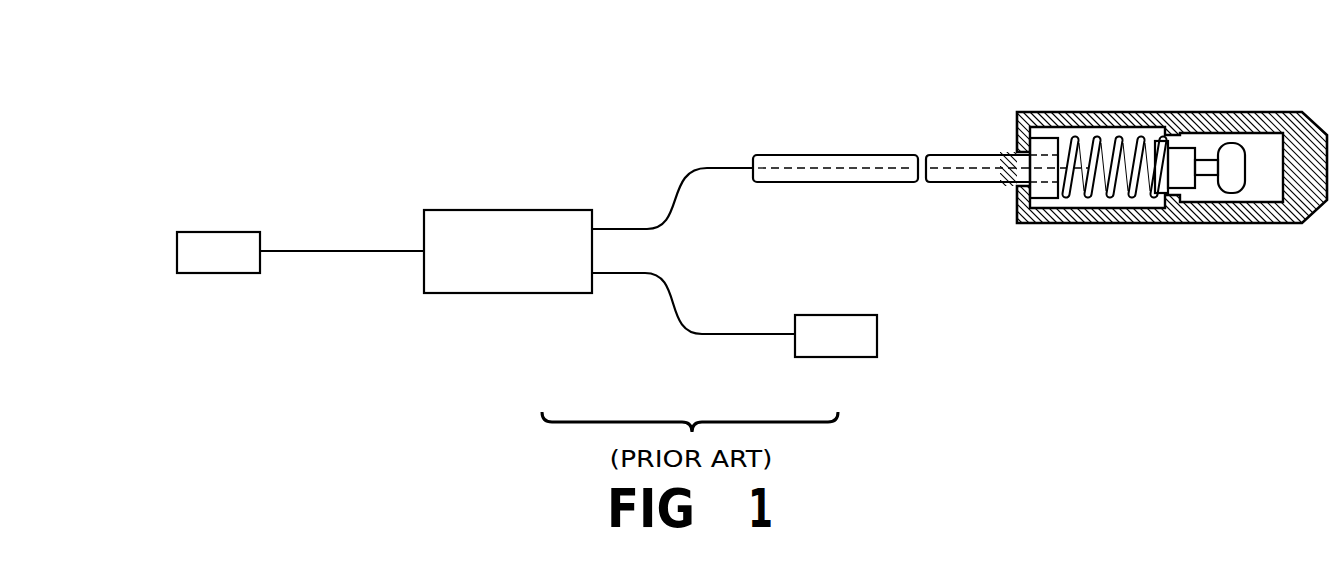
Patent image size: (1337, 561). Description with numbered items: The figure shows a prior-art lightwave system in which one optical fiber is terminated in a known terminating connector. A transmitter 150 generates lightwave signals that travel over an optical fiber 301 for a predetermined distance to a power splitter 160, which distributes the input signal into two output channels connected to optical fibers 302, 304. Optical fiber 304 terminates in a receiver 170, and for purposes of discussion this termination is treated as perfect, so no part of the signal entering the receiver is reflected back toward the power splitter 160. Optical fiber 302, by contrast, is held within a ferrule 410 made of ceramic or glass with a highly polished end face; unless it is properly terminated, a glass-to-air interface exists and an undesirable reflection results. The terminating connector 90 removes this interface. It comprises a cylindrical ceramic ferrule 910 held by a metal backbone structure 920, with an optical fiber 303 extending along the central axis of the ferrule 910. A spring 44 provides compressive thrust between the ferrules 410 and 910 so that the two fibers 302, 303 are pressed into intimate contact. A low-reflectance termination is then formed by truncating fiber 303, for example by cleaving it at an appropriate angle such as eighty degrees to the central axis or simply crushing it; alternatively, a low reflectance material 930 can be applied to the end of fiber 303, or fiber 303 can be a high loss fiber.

The terminating connector 90 is at (1176, 79).
The spring 44 is at (1097, 140).
The transmitter 150 is at (217, 232).
The power splitter 160 is at (466, 210).
The receiver 170 is at (838, 315).
The optical fiber 301 is at (333, 251).
The optical fiber 302 is at (720, 168).
The optical fiber 303 is at (1003, 170).
The optical fiber 304 is at (765, 333).
The ferrule 410 is at (837, 155).
The cylindrical ceramic ferrule 910 is at (1002, 153).
The backbone structure 920 is at (1045, 192).
The low reflectance material 930 is at (1230, 192).